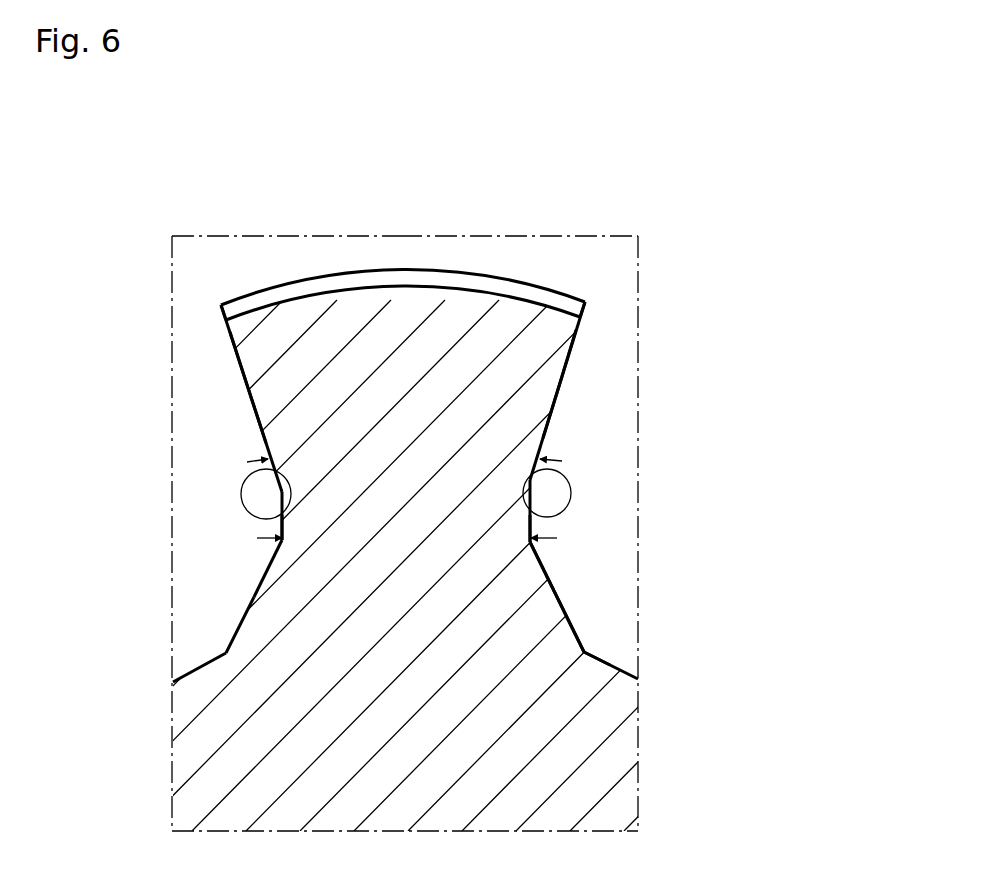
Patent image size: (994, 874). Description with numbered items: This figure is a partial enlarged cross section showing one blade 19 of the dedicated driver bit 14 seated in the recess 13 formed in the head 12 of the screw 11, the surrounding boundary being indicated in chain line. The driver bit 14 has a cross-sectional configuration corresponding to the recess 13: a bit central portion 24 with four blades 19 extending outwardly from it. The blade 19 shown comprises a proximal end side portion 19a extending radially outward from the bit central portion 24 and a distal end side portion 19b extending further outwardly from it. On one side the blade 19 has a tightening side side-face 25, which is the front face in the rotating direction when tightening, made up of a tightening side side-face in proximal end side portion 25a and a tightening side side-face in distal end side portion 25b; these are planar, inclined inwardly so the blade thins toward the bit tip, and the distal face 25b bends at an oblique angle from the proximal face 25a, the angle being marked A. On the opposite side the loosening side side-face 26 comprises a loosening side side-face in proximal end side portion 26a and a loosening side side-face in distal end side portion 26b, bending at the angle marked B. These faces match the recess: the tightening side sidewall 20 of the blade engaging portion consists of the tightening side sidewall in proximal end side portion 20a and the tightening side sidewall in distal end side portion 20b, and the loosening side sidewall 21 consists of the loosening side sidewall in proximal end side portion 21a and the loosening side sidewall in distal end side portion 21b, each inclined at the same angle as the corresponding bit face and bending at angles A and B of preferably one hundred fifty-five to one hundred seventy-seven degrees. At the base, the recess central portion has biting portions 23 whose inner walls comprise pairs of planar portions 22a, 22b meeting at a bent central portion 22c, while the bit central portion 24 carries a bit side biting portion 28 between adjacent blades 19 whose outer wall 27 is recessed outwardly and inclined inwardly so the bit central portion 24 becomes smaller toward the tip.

The screw 11 is at (185, 318).
The head 12 is at (610, 332).
The recess 13 is at (448, 290).
The dedicated driver bit 14 is at (618, 804).
The blade 19 is at (403, 378).
The proximal end side portion of blade 19a is at (405, 520).
The distal end side portion of blade 19b is at (345, 348).
The tightening side sidewall 20 is at (553, 397).
The tightening side sidewall in proximal end side portion 20a is at (565, 513).
The tightening side sidewall in distal end side portion 20b is at (570, 380).
The loosening side sidewall 21 is at (260, 378).
The loosening side sidewall in proximal end side portion 21a is at (290, 512).
The loosening side sidewall in distal end side portion 21b is at (250, 378).
The planar portion of inner wall 22a is at (607, 665).
The planar portion of inner wall 22b is at (548, 580).
The central portion of inner wall 22c is at (532, 627).
The biting portion 23 is at (228, 655).
The bit central portion 24 is at (407, 797).
The tightening side side-face 25 is at (552, 425).
The tightening side side-face in proximal end side portion 25a is at (533, 527).
The tightening side side-face in distal end side portion 25b is at (565, 382).
The loosening side side-face 26 is at (257, 420).
The loosening side side-face in proximal end side portion 26a is at (280, 522).
The loosening side side-face in distal end side portion 26b is at (243, 376).
The outer wall of bit side biting portion 27 is at (253, 600).
The bit side biting portion 28 is at (227, 653).